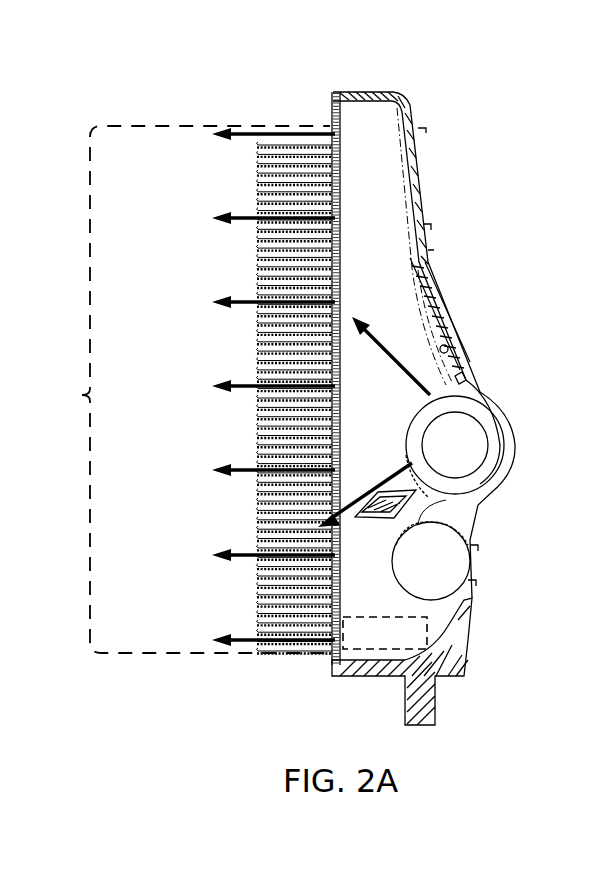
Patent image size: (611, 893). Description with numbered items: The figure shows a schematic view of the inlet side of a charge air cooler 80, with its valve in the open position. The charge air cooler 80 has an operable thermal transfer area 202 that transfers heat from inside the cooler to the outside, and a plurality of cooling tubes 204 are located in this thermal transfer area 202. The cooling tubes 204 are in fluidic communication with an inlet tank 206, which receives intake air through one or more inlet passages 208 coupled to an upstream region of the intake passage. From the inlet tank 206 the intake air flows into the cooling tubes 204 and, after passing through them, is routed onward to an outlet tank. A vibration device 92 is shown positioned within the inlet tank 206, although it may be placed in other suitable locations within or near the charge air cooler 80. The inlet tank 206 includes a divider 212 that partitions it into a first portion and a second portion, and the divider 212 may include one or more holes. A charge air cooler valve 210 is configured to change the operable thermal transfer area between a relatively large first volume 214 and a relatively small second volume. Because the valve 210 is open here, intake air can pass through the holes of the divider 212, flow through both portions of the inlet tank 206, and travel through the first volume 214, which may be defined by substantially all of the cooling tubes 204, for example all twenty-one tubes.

The charge air cooler 80 is at (427, 80).
The operable thermal transfer area 202 is at (264, 112).
The cooling tubes 204 is at (258, 192).
The inlet tank 206 is at (417, 197).
The inlet passages 208 is at (490, 437).
The charge air cooler valve 210 is at (432, 317).
The divider 212 is at (440, 362).
The first volume 214 is at (184, 389).
The vibration device 92 is at (427, 633).